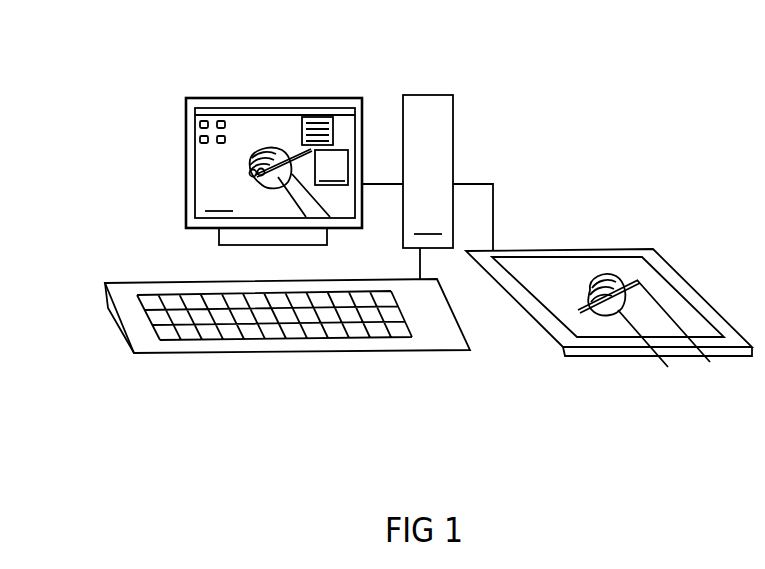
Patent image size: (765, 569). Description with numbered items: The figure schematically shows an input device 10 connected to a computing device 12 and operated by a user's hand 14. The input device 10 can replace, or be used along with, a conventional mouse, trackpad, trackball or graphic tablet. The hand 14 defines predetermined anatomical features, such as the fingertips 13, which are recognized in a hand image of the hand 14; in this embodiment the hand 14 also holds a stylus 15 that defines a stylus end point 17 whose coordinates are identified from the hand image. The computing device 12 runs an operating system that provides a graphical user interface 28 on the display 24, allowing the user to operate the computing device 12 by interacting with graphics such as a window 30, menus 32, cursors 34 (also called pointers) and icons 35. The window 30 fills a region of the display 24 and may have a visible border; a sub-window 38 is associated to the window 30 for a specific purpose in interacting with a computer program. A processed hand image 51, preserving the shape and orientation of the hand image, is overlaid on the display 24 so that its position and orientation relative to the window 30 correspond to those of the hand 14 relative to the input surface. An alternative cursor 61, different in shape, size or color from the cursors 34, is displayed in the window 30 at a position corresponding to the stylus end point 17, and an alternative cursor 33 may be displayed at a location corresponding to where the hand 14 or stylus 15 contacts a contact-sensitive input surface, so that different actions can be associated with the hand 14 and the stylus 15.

The input device 10 is at (705, 283).
The computing device 12 is at (428, 171).
The fingertips 13 is at (585, 283).
The hand 14 is at (608, 280).
The stylus 15 is at (638, 278).
The stylus end point 17 is at (590, 303).
The display 24 is at (320, 98).
The graphical user interface 28 is at (270, 130).
The window 30 is at (219, 199).
The menus 32 is at (333, 133).
The alternative cursor 33 is at (243, 160).
The cursors 34 is at (250, 174).
The icons 35 is at (220, 121).
The sub-window 38 is at (331, 167).
The processed hand image 51 is at (332, 219).
The alternative cursor 61 is at (258, 185).